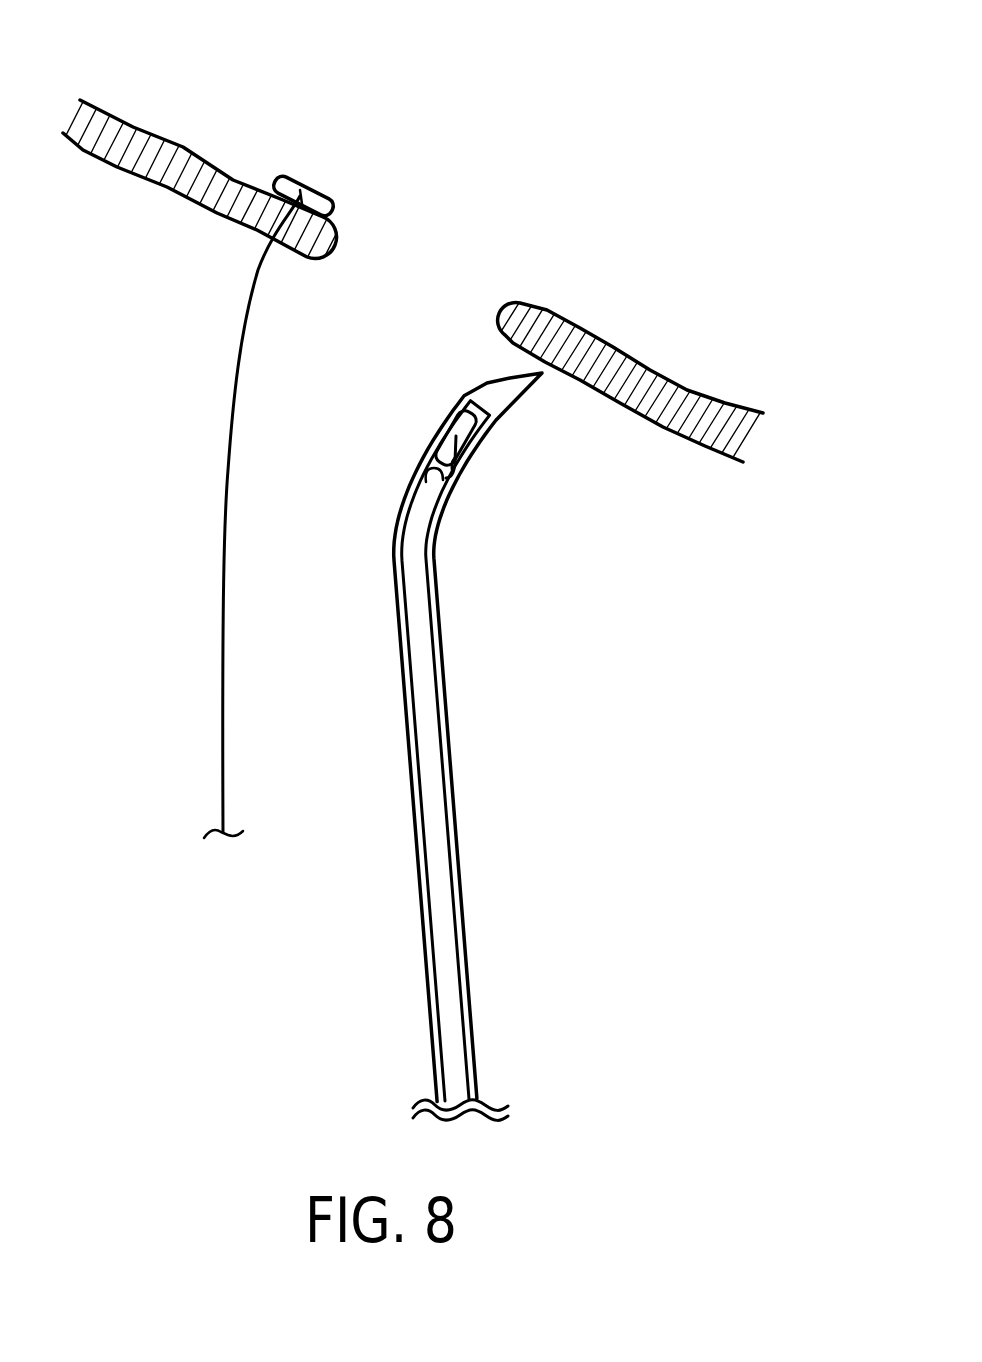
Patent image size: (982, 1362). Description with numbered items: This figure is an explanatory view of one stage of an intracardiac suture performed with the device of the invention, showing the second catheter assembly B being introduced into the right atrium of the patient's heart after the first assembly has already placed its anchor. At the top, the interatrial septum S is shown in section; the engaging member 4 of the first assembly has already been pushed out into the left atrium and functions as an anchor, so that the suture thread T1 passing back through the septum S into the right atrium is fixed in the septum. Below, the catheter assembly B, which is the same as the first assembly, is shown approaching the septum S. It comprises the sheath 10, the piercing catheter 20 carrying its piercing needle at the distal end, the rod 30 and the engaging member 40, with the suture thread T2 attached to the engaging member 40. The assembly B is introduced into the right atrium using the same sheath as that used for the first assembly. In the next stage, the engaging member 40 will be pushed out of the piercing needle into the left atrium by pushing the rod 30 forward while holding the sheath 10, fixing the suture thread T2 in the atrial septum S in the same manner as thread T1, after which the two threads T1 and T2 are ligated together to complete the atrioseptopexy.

The interatrial septum S is at (110, 117).
The engaging member 4 is at (327, 193).
The suture thread T1 is at (226, 490).
The sheath 10 is at (450, 750).
The piercing catheter 20 is at (460, 872).
The rod 30 is at (418, 463).
The engaging member 40 is at (458, 445).
The suture thread T2 is at (452, 477).
The catheter assembly B is at (495, 990).